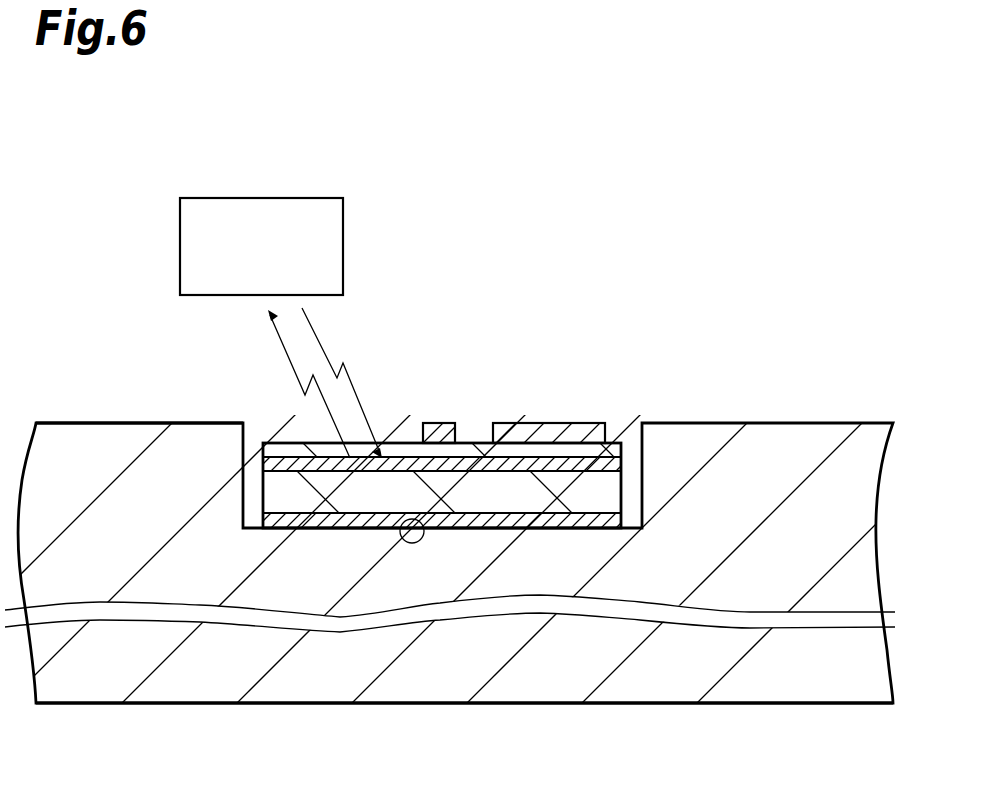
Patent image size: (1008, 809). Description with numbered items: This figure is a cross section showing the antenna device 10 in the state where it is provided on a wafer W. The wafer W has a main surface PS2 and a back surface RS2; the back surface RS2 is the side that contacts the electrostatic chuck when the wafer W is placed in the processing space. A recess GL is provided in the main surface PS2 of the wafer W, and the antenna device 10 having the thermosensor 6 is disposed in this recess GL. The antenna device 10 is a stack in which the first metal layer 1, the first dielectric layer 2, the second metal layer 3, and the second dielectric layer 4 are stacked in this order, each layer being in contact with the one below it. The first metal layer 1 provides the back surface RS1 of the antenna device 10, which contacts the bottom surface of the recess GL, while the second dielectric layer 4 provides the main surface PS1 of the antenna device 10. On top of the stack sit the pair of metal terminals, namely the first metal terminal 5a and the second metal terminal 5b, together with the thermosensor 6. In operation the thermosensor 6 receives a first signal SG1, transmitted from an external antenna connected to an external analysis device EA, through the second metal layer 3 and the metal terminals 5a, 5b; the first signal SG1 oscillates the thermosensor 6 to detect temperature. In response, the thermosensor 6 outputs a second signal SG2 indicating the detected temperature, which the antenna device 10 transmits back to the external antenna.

The wafer W is at (857, 503).
The main surface of the antenna device PS1 is at (287, 442).
The main surface of the wafer PS2 is at (72, 422).
The back surface of the antenna device RS1 is at (402, 519).
The back surface of the wafer RS2 is at (107, 705).
The first metal layer 1 is at (498, 527).
The first dielectric layer 2 is at (582, 493).
The second metal layer 3 is at (272, 451).
The second dielectric layer 4 is at (268, 463).
The first metal terminal 5a is at (466, 404).
The second metal terminal 5b is at (435, 440).
The thermosensor 6 is at (548, 433).
The antenna device 10 is at (613, 422).
The recess GL is at (632, 422).
The emitting/analysis apparatus EA is at (303, 197).
The first signal SG1 is at (308, 320).
The second signal SG2 is at (280, 338).